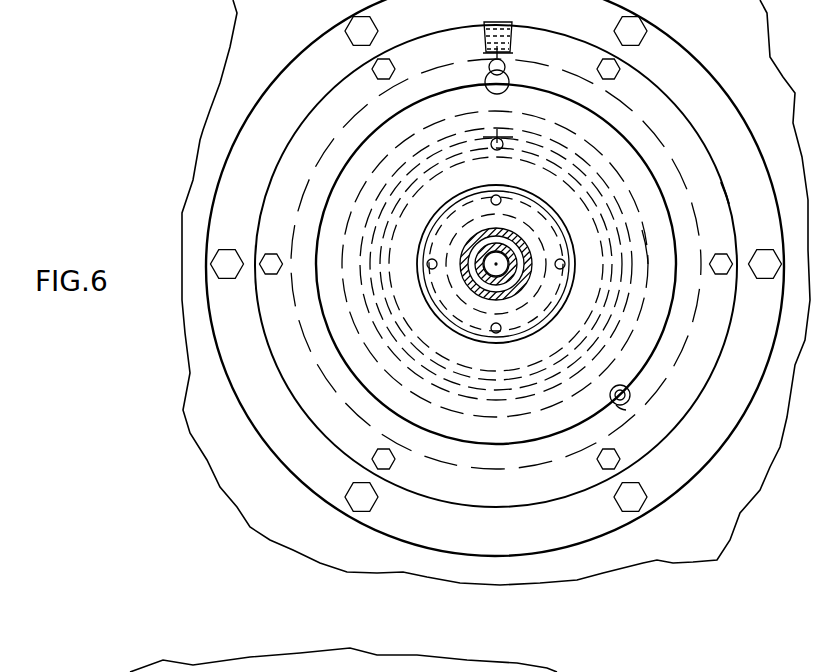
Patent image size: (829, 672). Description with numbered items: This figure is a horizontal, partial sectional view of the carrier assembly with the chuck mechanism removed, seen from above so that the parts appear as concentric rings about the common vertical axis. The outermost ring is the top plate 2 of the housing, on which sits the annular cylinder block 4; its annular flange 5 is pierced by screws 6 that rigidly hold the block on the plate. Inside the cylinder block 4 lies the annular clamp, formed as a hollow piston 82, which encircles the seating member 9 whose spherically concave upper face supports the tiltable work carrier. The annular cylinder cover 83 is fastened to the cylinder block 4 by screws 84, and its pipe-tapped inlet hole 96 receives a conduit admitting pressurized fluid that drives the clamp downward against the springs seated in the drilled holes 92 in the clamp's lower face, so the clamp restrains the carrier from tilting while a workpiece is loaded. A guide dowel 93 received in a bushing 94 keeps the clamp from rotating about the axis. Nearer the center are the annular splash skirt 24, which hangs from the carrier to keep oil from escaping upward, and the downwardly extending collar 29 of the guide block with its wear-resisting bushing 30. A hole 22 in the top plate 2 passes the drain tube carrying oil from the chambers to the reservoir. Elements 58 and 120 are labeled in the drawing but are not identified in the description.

The top plate 2 is at (743, 43).
The annular cylinder block 4 is at (706, 380).
The annular flange 5 is at (745, 418).
The screws 6 is at (762, 279).
The seating member 9 is at (627, 178).
The hole 22 is at (528, 122).
The annular splash skirt 24 is at (623, 278).
The downwardly extending collar 29 is at (519, 262).
The bushing 30 is at (525, 240).
The shaft bore 58 is at (468, 266).
The hollow piston 82 is at (660, 192).
The annular cylinder cover 83 is at (728, 192).
The screws 84 is at (719, 257).
The holes 92 is at (511, 77).
The guide dowel 93 is at (621, 408).
The bushing 94 is at (632, 380).
The inlet hole 96 is at (514, 37).
The seal ring 120 is at (645, 259).